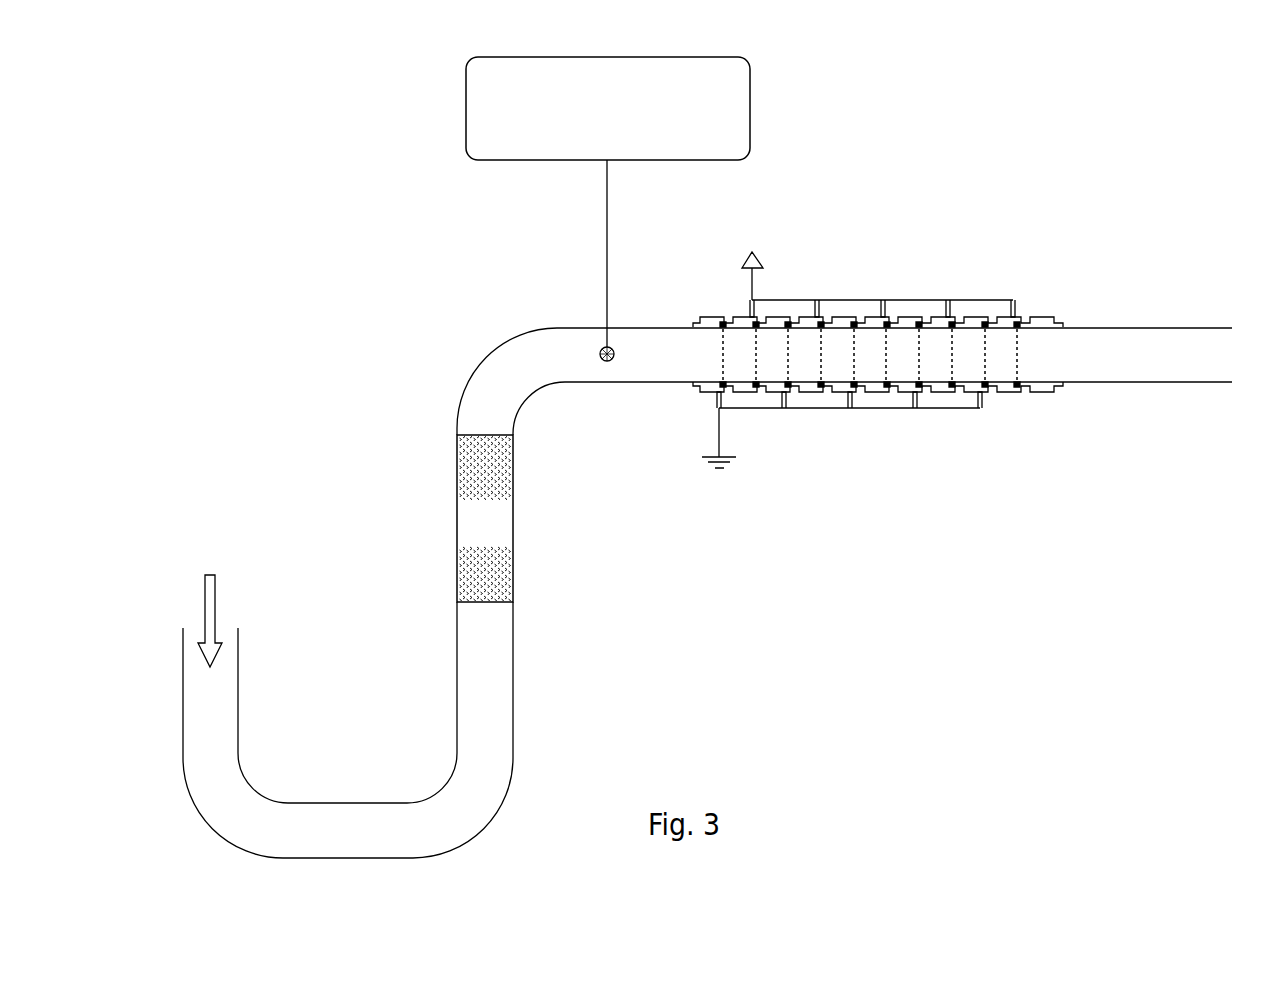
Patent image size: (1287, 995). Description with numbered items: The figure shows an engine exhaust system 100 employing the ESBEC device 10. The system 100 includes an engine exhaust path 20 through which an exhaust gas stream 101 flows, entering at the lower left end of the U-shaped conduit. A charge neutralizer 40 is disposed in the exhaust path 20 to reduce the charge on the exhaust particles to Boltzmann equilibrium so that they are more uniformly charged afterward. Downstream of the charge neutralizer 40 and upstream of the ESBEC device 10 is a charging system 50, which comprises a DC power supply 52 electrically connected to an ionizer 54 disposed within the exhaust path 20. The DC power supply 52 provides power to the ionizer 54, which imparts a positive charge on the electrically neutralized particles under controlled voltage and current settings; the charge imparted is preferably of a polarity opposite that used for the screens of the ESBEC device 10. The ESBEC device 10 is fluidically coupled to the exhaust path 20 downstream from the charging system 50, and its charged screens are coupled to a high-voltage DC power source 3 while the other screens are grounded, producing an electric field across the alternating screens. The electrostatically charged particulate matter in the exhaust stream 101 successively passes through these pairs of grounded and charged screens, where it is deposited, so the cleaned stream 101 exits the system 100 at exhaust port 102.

The system 100 is at (227, 248).
The engine exhaust path 20 is at (460, 380).
The charge neutralizer 40 is at (497, 535).
The exhaust gas stream 101 is at (217, 603).
The exhaust port 102 is at (1222, 362).
The charging system 50 is at (773, 150).
The DC power supply 52 is at (466, 122).
The ionizer 54 is at (600, 350).
The ESBEC device 10 is at (943, 270).
The high-voltage DC power source 3 is at (757, 257).